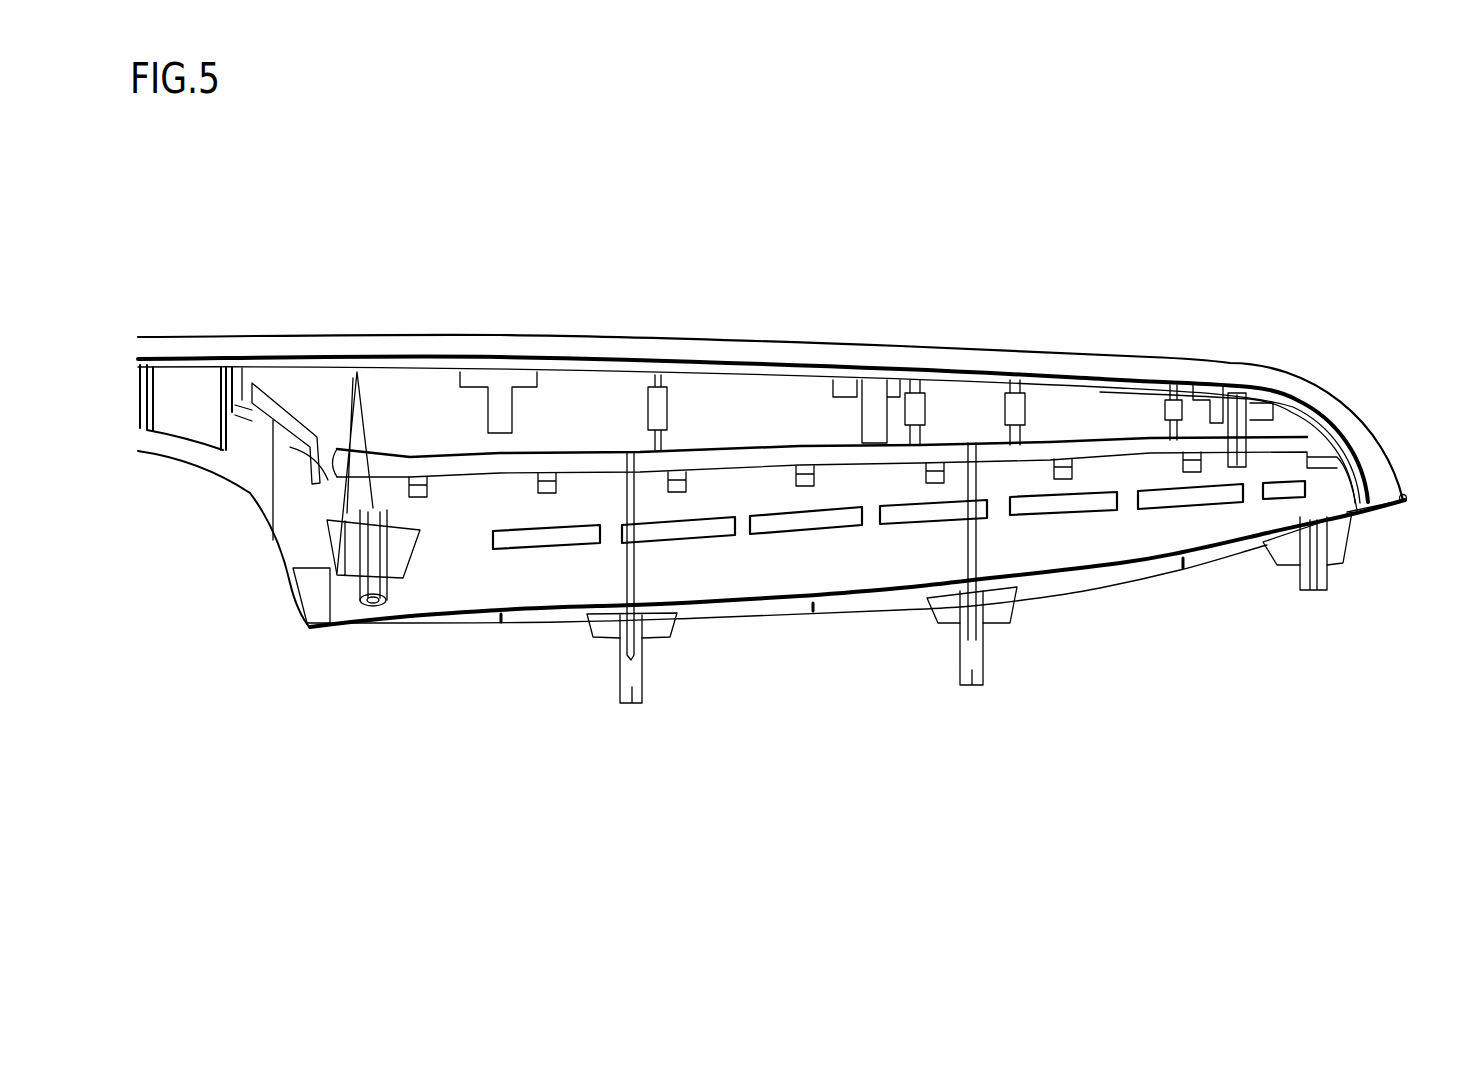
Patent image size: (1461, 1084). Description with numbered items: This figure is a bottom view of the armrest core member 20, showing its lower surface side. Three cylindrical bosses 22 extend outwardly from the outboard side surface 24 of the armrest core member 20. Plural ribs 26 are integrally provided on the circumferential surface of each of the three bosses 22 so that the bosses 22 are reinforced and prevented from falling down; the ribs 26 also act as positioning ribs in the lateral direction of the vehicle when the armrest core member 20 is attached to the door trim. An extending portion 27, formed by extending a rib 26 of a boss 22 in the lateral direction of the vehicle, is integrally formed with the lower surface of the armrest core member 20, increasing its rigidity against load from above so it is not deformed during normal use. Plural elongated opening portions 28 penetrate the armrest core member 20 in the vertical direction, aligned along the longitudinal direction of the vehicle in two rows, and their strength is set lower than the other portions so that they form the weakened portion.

The armrest core member 20 is at (890, 332).
The boss 22 is at (632, 705).
The outboard side surface 24 is at (848, 605).
The rib 26 is at (607, 637).
The extending portion 27 is at (623, 491).
The opening portion 28 is at (453, 462).